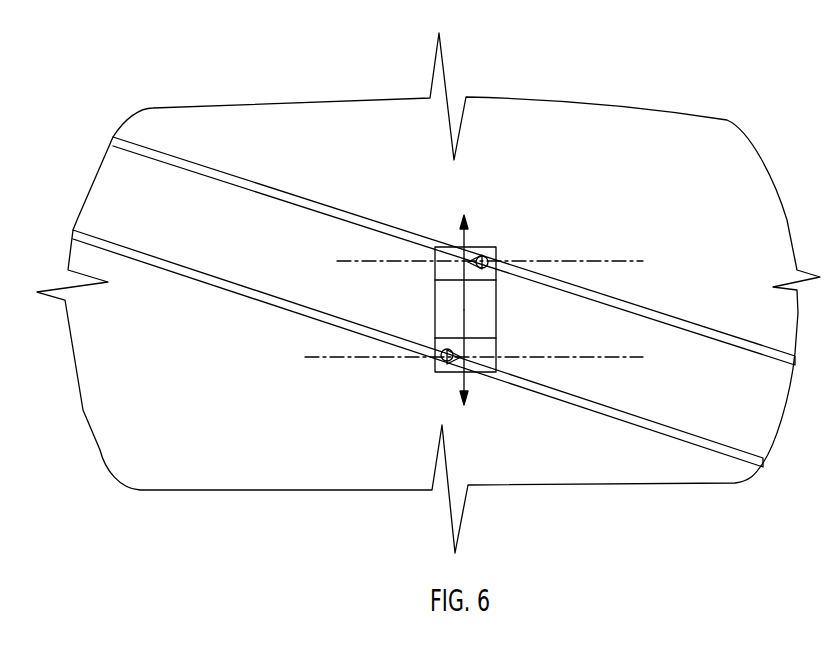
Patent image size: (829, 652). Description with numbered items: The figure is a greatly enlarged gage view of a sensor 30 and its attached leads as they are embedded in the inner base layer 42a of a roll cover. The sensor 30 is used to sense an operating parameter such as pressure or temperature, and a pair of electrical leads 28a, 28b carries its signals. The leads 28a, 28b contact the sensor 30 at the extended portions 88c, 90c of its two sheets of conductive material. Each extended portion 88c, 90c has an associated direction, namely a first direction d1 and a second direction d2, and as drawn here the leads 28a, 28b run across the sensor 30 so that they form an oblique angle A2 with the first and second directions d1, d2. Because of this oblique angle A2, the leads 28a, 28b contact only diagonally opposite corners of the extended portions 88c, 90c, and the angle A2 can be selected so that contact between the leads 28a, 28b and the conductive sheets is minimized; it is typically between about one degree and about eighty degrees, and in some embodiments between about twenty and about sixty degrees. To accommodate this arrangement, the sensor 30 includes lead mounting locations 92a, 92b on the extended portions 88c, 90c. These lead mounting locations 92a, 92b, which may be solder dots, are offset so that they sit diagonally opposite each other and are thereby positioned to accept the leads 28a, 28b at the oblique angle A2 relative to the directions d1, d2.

The electrical lead 28a is at (277, 188).
The electrical lead 28b is at (227, 289).
The inner base layer 42a is at (687, 187).
The sensor 30 is at (496, 313).
The extended portion 88c is at (445, 255).
The extended portion 90c is at (483, 350).
The lead mounting location 92a is at (492, 240).
The lead mounting location 92b is at (440, 365).
The first direction d1 is at (467, 232).
The second direction d2 is at (462, 387).
The oblique angle A2 is at (507, 262).